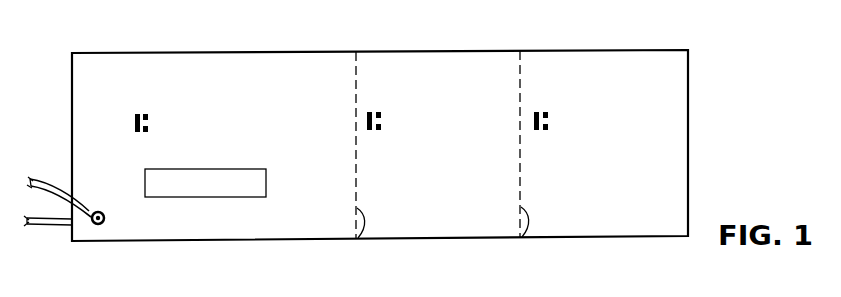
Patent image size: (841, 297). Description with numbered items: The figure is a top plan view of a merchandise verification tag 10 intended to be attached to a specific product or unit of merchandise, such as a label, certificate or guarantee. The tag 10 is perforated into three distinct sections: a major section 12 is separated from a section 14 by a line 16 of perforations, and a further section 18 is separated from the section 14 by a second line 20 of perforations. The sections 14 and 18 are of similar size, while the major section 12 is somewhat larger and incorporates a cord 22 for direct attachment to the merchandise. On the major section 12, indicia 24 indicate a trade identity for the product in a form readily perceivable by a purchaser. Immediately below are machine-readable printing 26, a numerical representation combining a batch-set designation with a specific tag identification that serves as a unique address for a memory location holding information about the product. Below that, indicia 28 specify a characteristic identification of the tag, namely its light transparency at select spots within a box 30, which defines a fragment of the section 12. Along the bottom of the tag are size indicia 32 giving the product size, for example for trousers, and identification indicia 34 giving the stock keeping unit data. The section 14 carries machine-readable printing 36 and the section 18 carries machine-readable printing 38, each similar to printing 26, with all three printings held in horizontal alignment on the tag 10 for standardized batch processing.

The merchandise verification tag 10 is at (687, 140).
The major section 12 is at (217, 65).
The section 14 is at (437, 238).
The line of perforations 16 is at (358, 243).
The section 18 is at (605, 237).
The line of perforations 20 is at (520, 242).
The cord 22 is at (45, 228).
The indicia 24 is at (143, 80).
The machine-readable printing 26 is at (153, 110).
The indicia 28 is at (249, 152).
The box 30 is at (268, 187).
The size indicia 32 is at (190, 235).
The identification indicia 34 is at (243, 236).
The machine-readable printing 36 is at (440, 103).
The machine-readable printing 38 is at (570, 107).